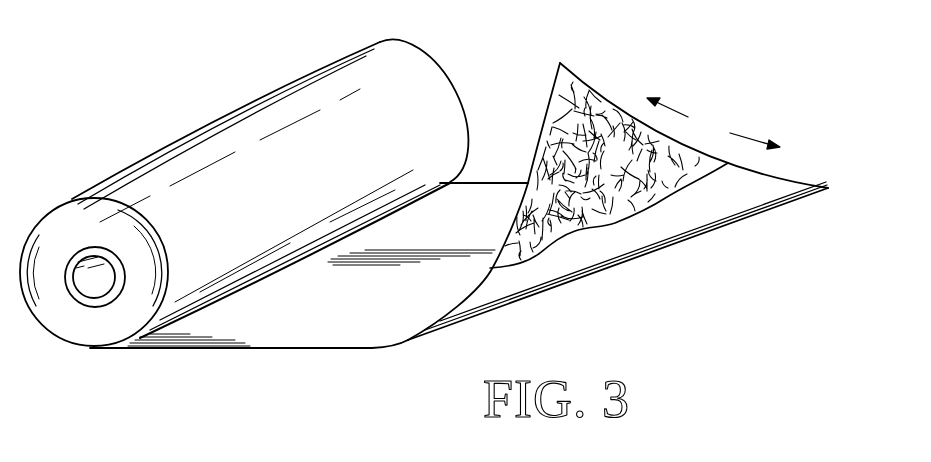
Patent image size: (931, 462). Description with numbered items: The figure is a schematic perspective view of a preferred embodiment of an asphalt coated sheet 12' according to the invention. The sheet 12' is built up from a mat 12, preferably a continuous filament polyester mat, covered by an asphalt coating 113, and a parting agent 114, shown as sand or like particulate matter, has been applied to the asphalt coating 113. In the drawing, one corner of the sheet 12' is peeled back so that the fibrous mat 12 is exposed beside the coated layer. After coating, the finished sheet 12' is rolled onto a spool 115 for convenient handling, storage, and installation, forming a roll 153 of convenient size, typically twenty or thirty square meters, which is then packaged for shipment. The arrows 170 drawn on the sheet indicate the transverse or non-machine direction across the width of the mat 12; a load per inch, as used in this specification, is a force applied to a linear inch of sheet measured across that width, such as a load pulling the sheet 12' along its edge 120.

The mat 12 is at (609, 154).
The sheet 12' is at (459, 294).
The asphalt coating 113 is at (318, 180).
The parting agent 114 is at (438, 82).
The spool 115 is at (92, 288).
The edge 120 is at (772, 173).
The roll 153 is at (198, 152).
The arrows 170 is at (713, 123).